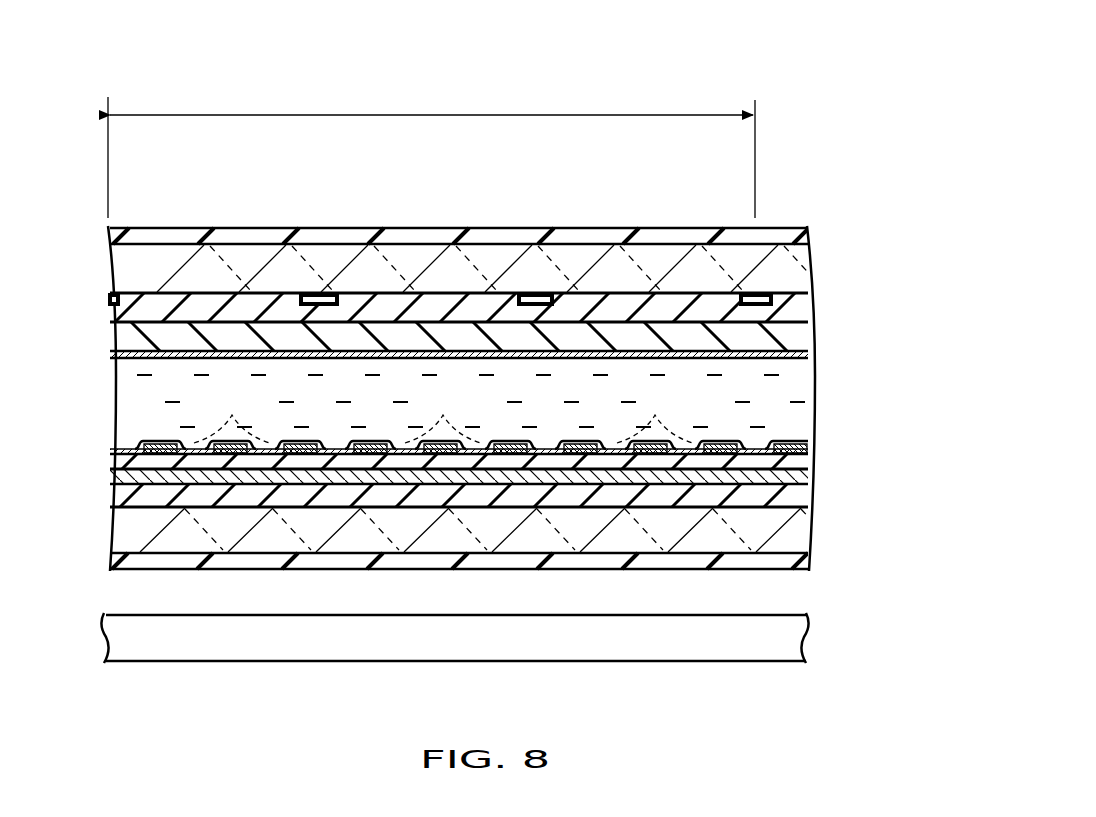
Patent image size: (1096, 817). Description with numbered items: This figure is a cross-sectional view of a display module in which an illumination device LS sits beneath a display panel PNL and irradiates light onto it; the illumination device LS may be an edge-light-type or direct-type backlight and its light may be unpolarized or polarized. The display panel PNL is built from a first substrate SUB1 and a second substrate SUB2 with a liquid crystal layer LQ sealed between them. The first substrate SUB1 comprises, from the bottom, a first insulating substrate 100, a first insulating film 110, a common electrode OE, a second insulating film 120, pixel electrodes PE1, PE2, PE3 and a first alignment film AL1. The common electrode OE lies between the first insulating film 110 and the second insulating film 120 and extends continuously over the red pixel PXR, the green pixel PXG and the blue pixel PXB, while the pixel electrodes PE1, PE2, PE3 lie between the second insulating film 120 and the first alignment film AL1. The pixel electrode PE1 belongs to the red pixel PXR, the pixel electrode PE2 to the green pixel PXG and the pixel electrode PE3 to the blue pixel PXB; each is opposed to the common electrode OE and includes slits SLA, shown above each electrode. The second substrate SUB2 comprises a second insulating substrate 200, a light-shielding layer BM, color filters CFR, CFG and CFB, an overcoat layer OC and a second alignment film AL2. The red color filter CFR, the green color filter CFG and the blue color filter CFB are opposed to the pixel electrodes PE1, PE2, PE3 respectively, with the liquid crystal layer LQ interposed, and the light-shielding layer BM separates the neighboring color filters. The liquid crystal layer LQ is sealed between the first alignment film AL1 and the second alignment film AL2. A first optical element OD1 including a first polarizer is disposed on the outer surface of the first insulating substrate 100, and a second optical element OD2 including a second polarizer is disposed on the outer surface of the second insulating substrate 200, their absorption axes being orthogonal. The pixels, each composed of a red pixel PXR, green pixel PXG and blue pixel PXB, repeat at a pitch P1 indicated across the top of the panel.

The display panel PNL is at (683, 97).
The pitch P1 is at (431, 153).
The second substrate SUB2 is at (826, 303).
The second optical element OD2 is at (808, 232).
The second insulating substrate 200 is at (110, 268).
The light-shielding layer BM is at (130, 290).
The red color filter CFR is at (197, 300).
The green color filter CFG is at (400, 300).
The blue color filter CFB is at (607, 300).
The red pixel PXR is at (265, 330).
The green pixel PXG is at (482, 330).
The blue pixel PXB is at (676, 330).
The overcoat layer OC is at (111, 337).
The second alignment film AL2 is at (112, 362).
The liquid crystal layer LQ is at (800, 392).
The slits SLA is at (443, 415).
The first substrate SUB1 is at (826, 518).
The first alignment film AL1 is at (110, 450).
The pixel electrode PE1 is at (232, 457).
The pixel electrode PE2 is at (372, 457).
The pixel electrode PE3 is at (583, 457).
The second insulating film 120 is at (110, 460).
The common electrode OE is at (110, 482).
The first insulating film 110 is at (110, 496).
The first insulating substrate 100 is at (110, 540).
The first optical element OD1 is at (808, 562).
The illumination device LS is at (806, 632).